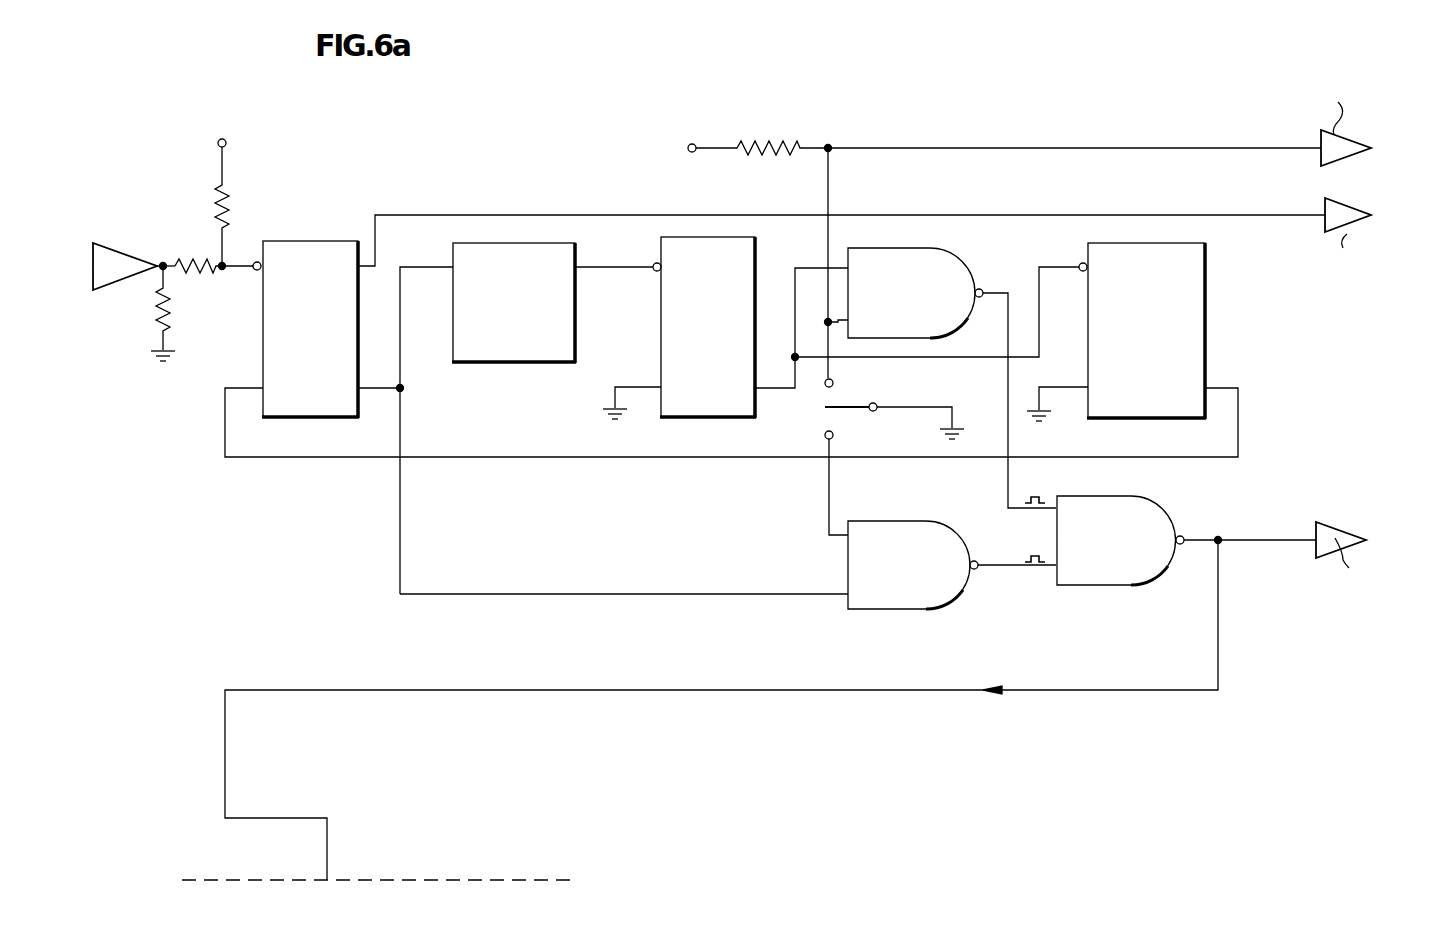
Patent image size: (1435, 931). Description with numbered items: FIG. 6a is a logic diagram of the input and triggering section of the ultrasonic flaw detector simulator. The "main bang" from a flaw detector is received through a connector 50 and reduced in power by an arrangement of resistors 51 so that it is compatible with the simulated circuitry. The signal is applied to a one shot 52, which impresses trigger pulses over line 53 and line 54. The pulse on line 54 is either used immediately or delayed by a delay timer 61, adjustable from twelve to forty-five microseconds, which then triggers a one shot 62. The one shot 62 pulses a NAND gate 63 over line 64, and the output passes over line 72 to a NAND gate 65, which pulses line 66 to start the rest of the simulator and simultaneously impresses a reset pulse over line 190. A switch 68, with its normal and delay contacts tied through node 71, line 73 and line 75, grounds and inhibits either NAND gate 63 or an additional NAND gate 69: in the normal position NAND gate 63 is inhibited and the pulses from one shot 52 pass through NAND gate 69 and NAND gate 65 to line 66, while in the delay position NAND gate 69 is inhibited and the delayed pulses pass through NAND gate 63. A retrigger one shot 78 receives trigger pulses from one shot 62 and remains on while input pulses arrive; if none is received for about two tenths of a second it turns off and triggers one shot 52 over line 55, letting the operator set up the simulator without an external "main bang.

The connector 50 is at (140, 254).
The resistors 51 is at (232, 206).
The one shot 52 is at (296, 240).
The line 53 is at (454, 214).
The line 54 is at (377, 390).
The line 55 is at (530, 459).
The delay timer 61 is at (510, 364).
The one shot 62 is at (748, 249).
The NAND gate 63 is at (956, 266).
The one shot output line 64 is at (794, 294).
The NAND gate 65 is at (1153, 516).
The line 66 is at (1107, 689).
The switch 68 is at (820, 407).
The NAND gate 69 is at (955, 594).
The pull-up node 71 is at (826, 318).
The NAND output line 72 is at (1002, 484).
The delay contact line 73 is at (833, 498).
The NAND input line 75 is at (742, 592).
The retrigger one shot 78 is at (1204, 266).
The line 190 is at (1253, 543).